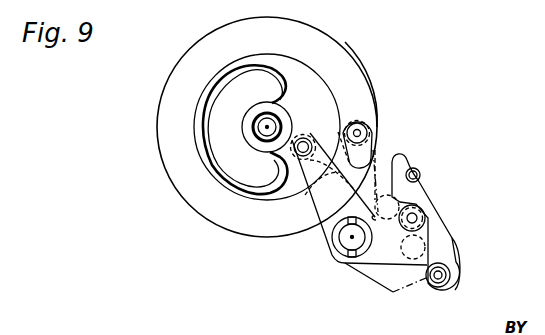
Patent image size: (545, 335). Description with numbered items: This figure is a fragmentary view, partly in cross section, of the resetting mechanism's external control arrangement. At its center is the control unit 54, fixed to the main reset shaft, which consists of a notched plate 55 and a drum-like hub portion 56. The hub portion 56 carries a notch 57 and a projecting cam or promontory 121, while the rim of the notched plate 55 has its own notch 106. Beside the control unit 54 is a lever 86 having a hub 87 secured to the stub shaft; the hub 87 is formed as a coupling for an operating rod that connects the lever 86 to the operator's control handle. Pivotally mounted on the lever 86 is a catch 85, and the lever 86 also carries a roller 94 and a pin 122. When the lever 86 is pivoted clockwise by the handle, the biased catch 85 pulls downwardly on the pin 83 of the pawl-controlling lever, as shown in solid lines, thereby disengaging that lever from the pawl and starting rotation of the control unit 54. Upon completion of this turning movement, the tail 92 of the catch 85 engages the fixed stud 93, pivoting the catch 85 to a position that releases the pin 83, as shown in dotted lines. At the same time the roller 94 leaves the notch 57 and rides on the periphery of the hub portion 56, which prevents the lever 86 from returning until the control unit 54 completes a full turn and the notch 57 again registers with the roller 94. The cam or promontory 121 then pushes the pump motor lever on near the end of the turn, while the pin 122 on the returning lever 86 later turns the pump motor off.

The control unit 54 is at (203, 215).
The notched plate 55 is at (356, 25).
The drum-like hub portion 56 is at (199, 149).
The notch 57 is at (296, 139).
The roller 94 is at (313, 150).
The notch 106 is at (373, 152).
The cam or promontory 121 is at (338, 167).
The catch 85 is at (407, 160).
The pin 83 is at (421, 174).
The lever 86 is at (300, 244).
The hub 87 is at (328, 264).
The pin 122 is at (380, 289).
The tail 92 is at (458, 265).
The stud 93 is at (425, 287).